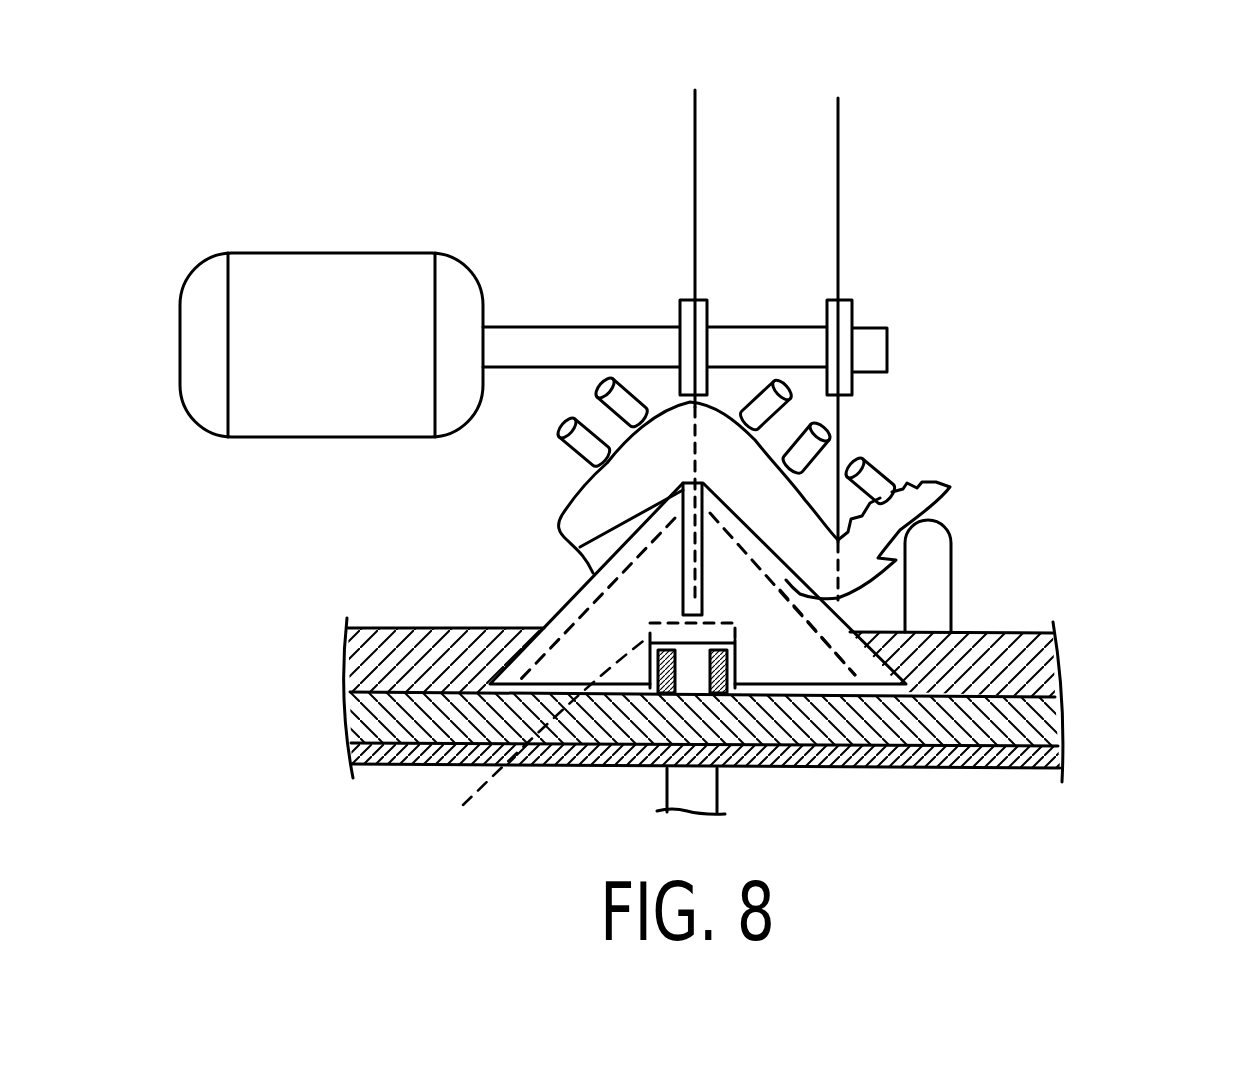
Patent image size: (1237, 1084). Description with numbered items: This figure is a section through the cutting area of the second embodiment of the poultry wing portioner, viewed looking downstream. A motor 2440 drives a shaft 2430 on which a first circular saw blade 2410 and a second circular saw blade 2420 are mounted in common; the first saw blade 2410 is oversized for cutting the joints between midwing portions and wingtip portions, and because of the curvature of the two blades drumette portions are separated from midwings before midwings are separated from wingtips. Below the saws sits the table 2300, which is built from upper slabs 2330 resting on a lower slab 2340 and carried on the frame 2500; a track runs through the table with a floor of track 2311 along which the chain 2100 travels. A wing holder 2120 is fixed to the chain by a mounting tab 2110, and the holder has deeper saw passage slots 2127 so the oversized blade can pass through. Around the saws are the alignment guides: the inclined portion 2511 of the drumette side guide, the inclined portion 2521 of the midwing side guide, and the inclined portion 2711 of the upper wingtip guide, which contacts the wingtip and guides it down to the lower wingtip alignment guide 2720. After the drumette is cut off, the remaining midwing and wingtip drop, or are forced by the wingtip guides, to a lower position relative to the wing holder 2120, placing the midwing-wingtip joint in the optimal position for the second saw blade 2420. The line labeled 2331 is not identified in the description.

The motor 2440 is at (333, 253).
The shaft 2430 is at (529, 327).
The first circular saw blade 2410 is at (692, 235).
The second circular saw blade 2420 is at (836, 135).
The inclined portion of drumette side alignment guide 2511 is at (605, 382).
The inclined portion of midwing side alignment guide 2521 is at (782, 380).
The inclined portion of upper wingtip alignment guide 2711 is at (864, 458).
The lower wingtip alignment guide 2720 is at (948, 488).
The wing holder 2120 is at (848, 628).
The saw passage slots 2127 is at (580, 547).
The chain 2100 is at (673, 650).
The mounting tab 2110 is at (523, 734).
The floor of track 2311 is at (630, 690).
The inner boundary 2331 is at (862, 642).
The table 2300 is at (721, 657).
The upper slabs of table 2330 is at (1030, 663).
The lower slab of table 2340 is at (1040, 720).
The frame 2500 is at (1045, 757).